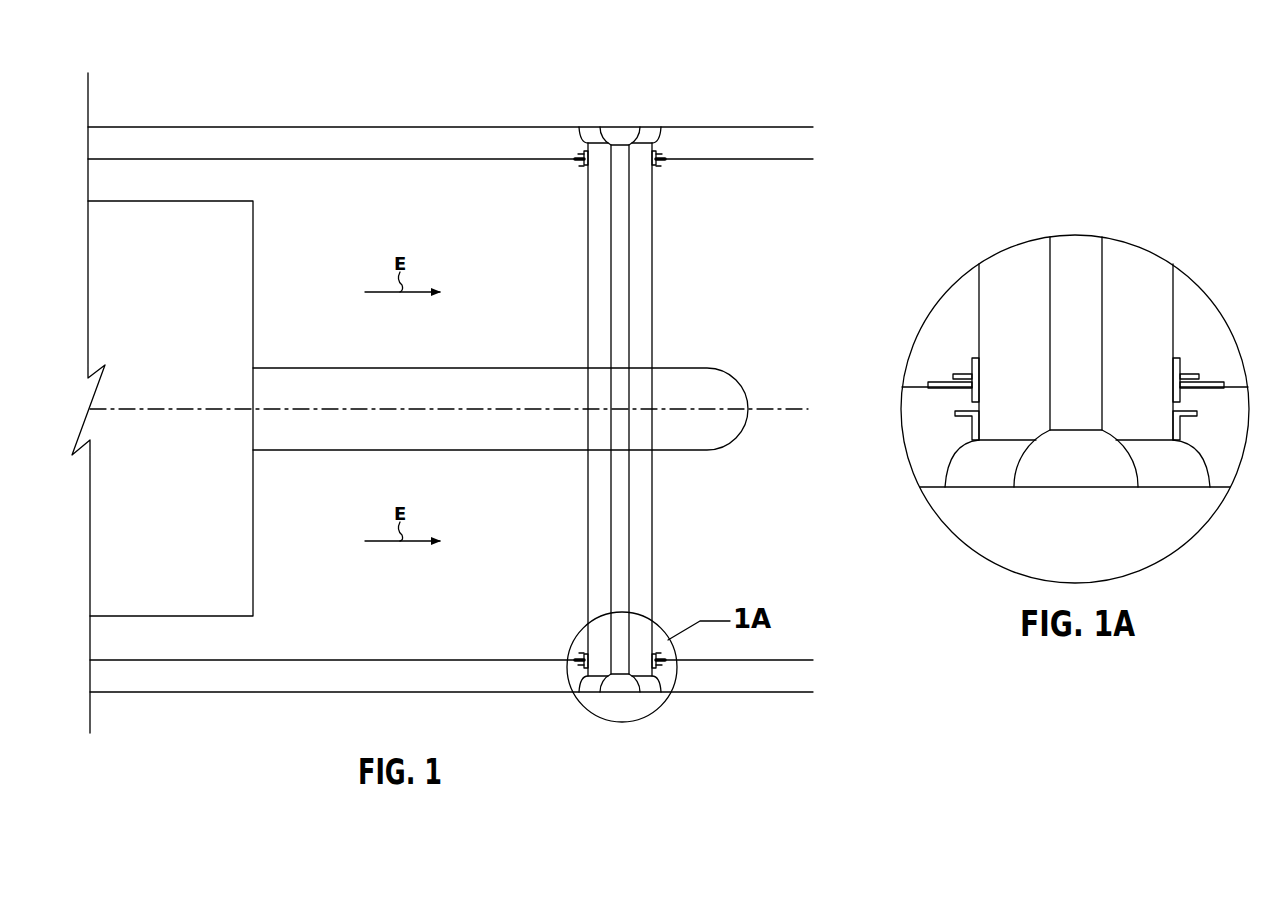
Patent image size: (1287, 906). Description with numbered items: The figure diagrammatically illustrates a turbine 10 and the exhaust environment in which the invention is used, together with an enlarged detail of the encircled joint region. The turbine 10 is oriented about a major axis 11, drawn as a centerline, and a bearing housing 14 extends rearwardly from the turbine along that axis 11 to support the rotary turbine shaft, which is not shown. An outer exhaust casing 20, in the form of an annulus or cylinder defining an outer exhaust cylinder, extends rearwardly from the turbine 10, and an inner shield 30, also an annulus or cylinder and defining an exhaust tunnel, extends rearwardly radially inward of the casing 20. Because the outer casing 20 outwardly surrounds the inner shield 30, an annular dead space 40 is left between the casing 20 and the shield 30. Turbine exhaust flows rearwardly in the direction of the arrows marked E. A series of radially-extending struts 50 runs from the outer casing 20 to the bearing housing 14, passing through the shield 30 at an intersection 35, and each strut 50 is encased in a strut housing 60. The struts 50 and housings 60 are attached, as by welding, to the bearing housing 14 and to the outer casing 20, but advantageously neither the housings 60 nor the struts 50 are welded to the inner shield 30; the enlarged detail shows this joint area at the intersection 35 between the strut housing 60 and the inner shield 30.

In FIG. 1, the turbine 10 is at (163, 74).
In FIG. 1, the major axis 11 is at (201, 412).
In FIG. 1, the bearing housing 14 is at (357, 365).
In FIG. 1, the outer exhaust casing 20 is at (312, 127).
In FIG. 1A, the outer exhaust casing 20 is at (1222, 490).
In FIG. 1, the inner shield 30 is at (380, 160).
In FIG. 1A, the inner shield 30 is at (1237, 387).
In FIG. 1A, the intersection 35 is at (1164, 357).
In FIG. 1, the annular dead space 40 is at (722, 146).
In FIG. 1A, the annular dead space 40 is at (1233, 441).
In FIG. 1, the struts 50 is at (623, 243).
In FIG. 1A, the struts 50 is at (1082, 266).
In FIG. 1, the strut housing 60 is at (653, 283).
In FIG. 1A, the strut housing 60 is at (1175, 283).